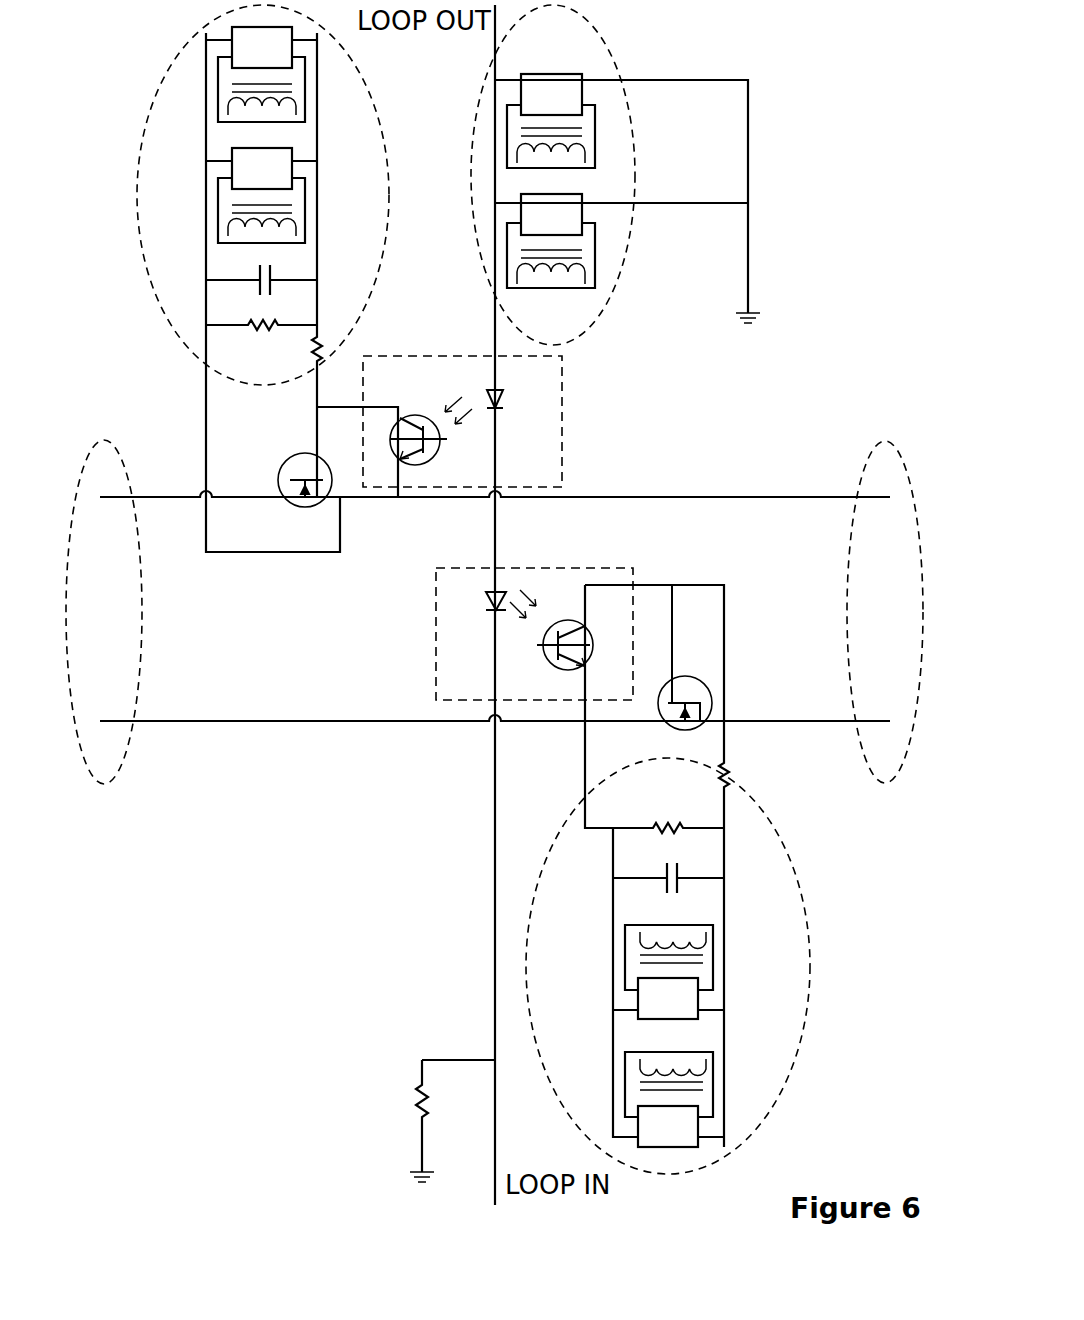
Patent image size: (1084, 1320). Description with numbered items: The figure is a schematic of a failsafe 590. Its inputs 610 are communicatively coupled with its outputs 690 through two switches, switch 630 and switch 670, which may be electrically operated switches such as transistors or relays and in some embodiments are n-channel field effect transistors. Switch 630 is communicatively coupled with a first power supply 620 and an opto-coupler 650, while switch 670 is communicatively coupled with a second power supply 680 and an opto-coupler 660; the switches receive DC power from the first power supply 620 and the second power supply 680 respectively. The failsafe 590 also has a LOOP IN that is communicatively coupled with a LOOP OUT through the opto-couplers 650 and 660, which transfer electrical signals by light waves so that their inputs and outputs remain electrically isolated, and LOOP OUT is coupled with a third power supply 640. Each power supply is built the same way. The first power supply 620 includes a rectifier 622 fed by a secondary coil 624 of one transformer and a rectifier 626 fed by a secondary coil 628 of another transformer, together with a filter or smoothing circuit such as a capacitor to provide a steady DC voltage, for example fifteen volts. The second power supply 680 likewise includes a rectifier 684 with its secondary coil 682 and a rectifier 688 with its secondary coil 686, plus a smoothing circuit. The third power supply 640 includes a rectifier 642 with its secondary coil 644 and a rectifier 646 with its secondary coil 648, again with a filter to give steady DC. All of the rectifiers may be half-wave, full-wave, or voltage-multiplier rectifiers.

The failsafe 590 is at (105, 37).
The inputs 610 is at (108, 440).
The first power supply 620 is at (366, 300).
The rectifier 622 is at (226, 44).
The secondary coil 624 is at (305, 105).
The rectifier 626 is at (226, 164).
The secondary coil 628 is at (305, 226).
The switch 630 is at (281, 458).
The third power supply 640 is at (586, 20).
The rectifier 642 is at (520, 90).
The secondary coil 644 is at (595, 145).
The rectifier 646 is at (520, 206).
The secondary coil 648 is at (595, 272).
The opto-coupler 650 is at (562, 422).
The opto-coupler 660 is at (436, 636).
The switch 670 is at (706, 685).
The second power supply 680 is at (781, 838).
The secondary coil 682 is at (625, 955).
The rectifier 684 is at (713, 1000).
The secondary coil 686 is at (625, 1069).
The rectifier 688 is at (713, 1128).
The outputs 690 is at (889, 438).